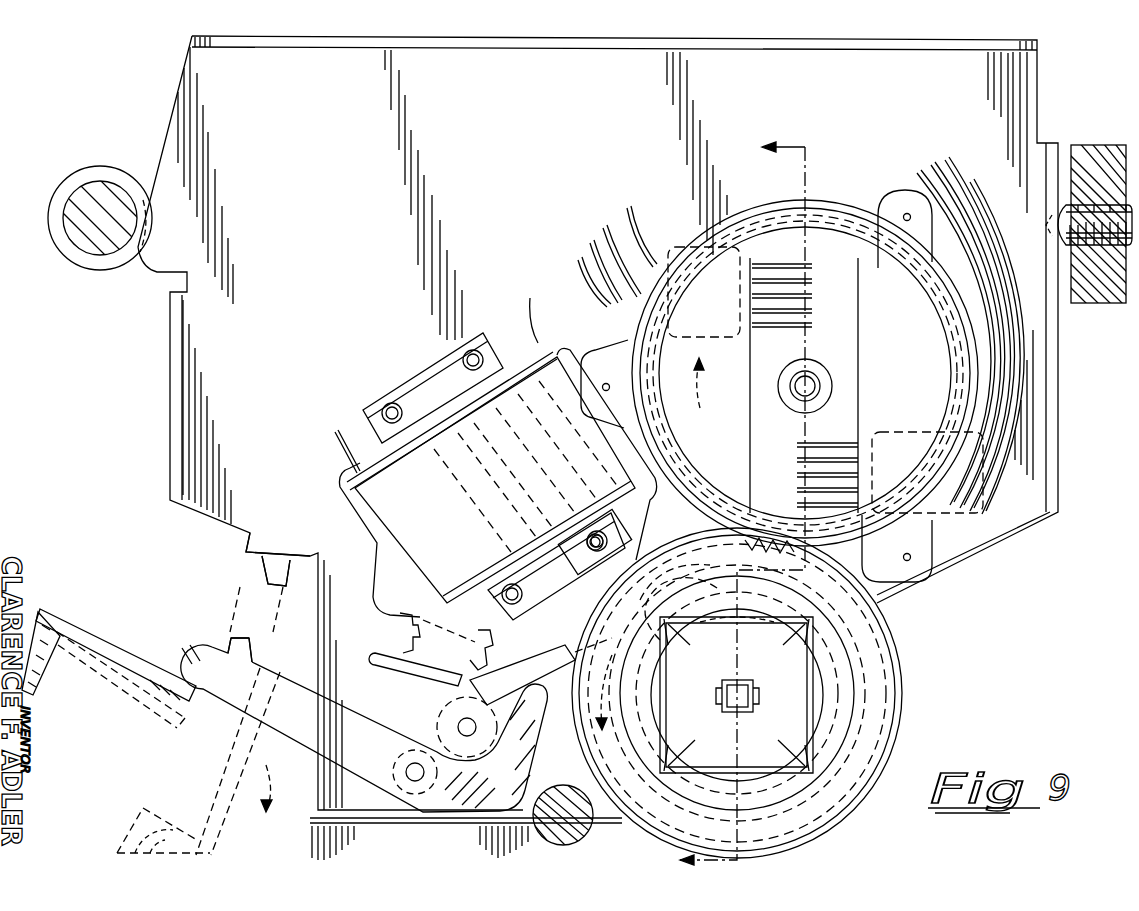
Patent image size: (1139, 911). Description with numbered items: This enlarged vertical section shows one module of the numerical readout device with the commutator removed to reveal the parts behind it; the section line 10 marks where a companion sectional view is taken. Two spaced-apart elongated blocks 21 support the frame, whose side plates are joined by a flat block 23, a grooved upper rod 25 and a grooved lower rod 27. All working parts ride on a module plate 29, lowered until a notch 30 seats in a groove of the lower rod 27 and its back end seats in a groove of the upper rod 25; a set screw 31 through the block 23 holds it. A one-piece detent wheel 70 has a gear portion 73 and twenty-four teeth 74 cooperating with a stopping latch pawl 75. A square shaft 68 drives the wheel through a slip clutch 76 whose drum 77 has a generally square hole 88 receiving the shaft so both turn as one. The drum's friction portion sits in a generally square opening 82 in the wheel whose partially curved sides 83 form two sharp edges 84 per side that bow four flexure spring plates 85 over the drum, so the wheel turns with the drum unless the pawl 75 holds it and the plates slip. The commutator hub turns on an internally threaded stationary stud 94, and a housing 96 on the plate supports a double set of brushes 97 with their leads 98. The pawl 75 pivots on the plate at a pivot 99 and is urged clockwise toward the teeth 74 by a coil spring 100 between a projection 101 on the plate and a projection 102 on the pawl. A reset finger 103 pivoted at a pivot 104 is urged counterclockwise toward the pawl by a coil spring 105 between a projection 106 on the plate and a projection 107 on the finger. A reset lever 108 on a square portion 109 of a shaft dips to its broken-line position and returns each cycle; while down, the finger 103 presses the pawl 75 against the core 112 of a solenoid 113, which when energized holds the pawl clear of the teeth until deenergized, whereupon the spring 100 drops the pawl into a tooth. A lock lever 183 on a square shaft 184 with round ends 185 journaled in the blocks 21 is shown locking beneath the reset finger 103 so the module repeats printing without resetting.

The section line 10— 10 is at (764, 505).
The elongated blocks 21 is at (330, 828).
The flat block 23 is at (1108, 146).
The upper rod 25 is at (78, 213).
The lower rod 27 is at (580, 828).
The module plate 29 is at (173, 360).
The notch 30 is at (545, 725).
The set screw 31 is at (1064, 245).
The square shaft 68 is at (740, 712).
The detent wheel 70 is at (898, 628).
The gear portion 73 is at (777, 540).
The teeth 74 is at (706, 600).
The stopping latch pawl 75 is at (541, 664).
The clutch 76 is at (830, 700).
The drum 77 is at (737, 695).
The generally square opening 82 is at (675, 628).
The partially curved sides 83 is at (740, 620).
The sharp edges 84 is at (678, 595).
The flexure spring plates 85 is at (790, 632).
The generally square hole 88 is at (756, 700).
The internally threaded stationary stud 94 is at (808, 375).
The housing 96 is at (885, 225).
The brushes 97 is at (808, 279).
The leads 98 is at (632, 222).
The pivot 99 is at (458, 725).
The coil spring 100 is at (452, 618).
The projection 101 is at (405, 640).
The projection 102 is at (478, 655).
The reset finger 103 is at (340, 725).
The pivot 104 is at (422, 780).
The coil spring 105 is at (245, 598).
The projection 106 is at (276, 562).
The projection 107 is at (252, 628).
The reset lever 108 is at (104, 645).
The square portion 109 is at (60, 665).
The core 112 is at (620, 541).
The solenoid 113 is at (485, 459).
The lock lever 183 is at (225, 808).
The square shaft 184 is at (135, 812).
The round ends 185 is at (130, 848).